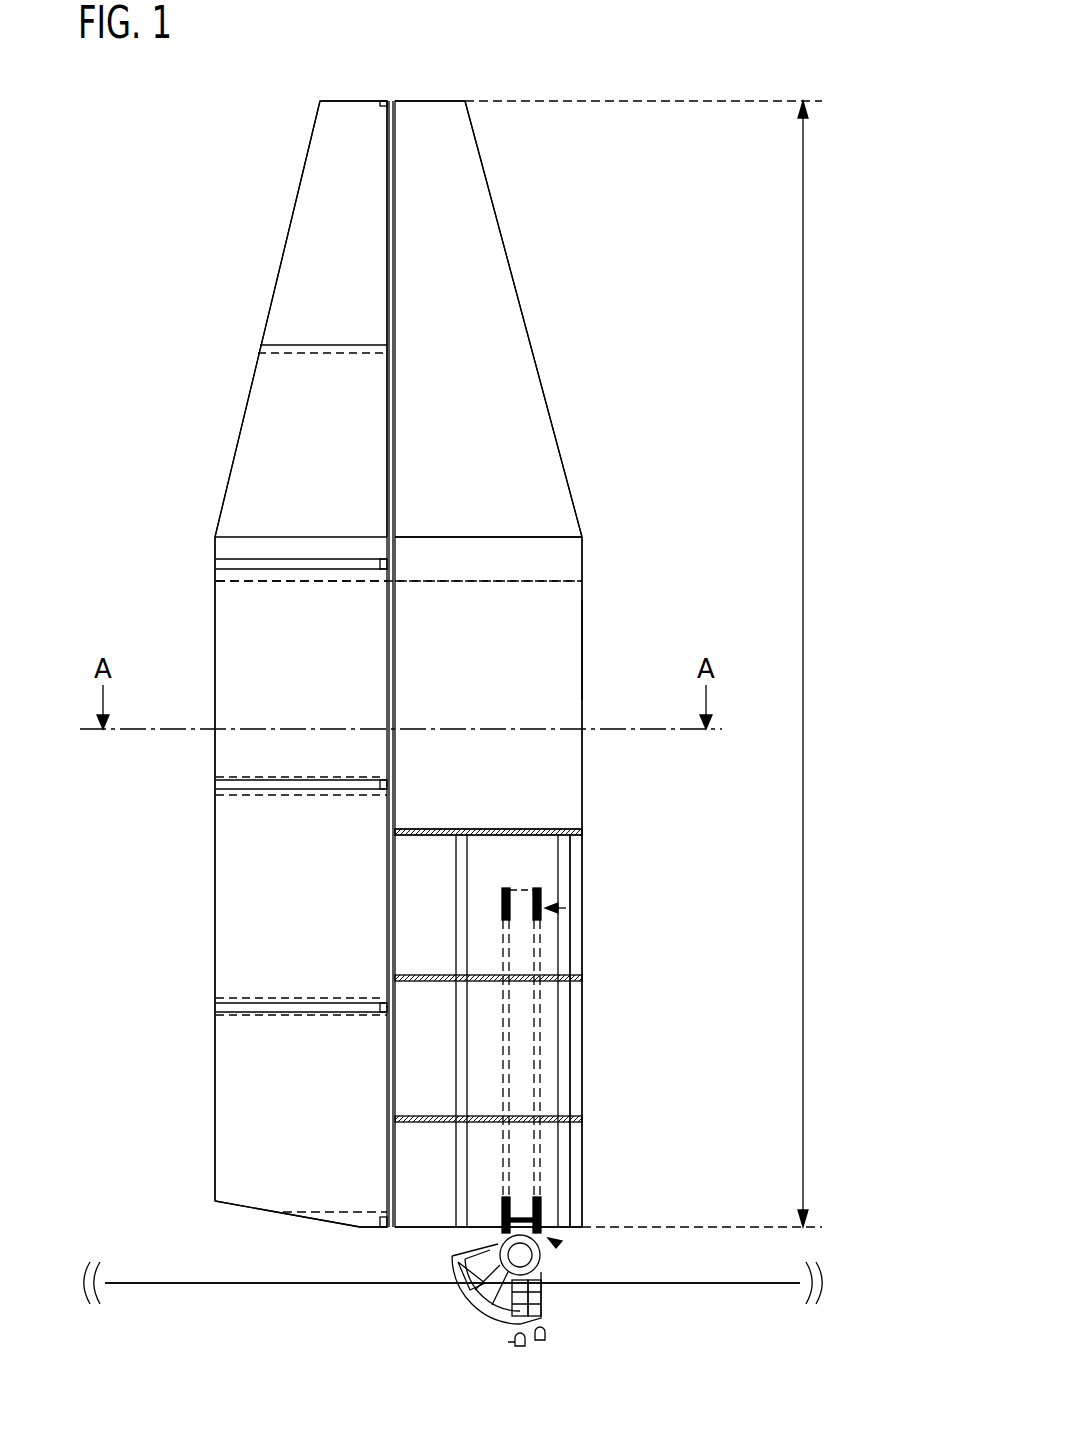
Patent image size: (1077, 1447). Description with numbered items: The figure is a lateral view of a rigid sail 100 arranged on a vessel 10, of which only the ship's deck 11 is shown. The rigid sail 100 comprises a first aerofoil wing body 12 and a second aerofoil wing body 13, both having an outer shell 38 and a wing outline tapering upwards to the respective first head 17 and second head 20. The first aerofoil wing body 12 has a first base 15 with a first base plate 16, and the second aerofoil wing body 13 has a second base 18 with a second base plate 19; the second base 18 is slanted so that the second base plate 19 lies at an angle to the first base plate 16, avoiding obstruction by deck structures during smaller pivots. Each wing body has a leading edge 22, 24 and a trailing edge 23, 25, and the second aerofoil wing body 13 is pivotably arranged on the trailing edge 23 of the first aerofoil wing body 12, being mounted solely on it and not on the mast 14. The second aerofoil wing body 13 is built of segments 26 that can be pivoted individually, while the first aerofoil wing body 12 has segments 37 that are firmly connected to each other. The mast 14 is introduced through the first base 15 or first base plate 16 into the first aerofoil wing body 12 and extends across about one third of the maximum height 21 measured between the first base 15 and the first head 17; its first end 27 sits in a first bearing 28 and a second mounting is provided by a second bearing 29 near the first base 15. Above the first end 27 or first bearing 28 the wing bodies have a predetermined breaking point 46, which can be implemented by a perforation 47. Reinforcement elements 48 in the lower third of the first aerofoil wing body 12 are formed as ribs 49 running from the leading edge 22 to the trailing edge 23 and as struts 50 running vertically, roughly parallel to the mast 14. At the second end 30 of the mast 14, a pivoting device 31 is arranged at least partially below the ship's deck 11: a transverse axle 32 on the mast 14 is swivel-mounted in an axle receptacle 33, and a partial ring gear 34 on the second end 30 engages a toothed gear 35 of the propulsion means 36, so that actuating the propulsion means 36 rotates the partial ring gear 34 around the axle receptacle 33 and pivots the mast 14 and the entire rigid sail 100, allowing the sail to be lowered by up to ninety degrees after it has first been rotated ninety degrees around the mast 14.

The rigid sail 100 is at (741, 64).
The vessel 10 is at (146, 1281).
The ship's deck 11 is at (186, 1281).
The first aerofoil wing body 12 is at (584, 598).
The second aerofoil wing body 13 is at (214, 605).
The mast 14 is at (540, 1085).
The first base 15 is at (558, 1244).
The first base plate 16 is at (430, 1224).
The first head 17 is at (425, 100).
The second base 18 is at (252, 1209).
The second base plate 19 is at (328, 1211).
The second head 20 is at (357, 100).
The maximum height 21 is at (802, 600).
The leading edge 22 is at (584, 693).
The trailing edge 23 is at (397, 383).
The leading edge 24 is at (386, 462).
The trailing edge 25 is at (214, 651).
The segments 26 is at (289, 230).
The first end 27 is at (566, 908).
The first bearing 28 is at (542, 897).
The second bearing 29 is at (542, 1208).
The second end 30 is at (542, 1262).
The pivoting device 31 is at (482, 1305).
The transverse axle 32 is at (541, 1282).
The axle receptacle 33 is at (498, 1248).
The partial ring gear 34 is at (470, 1290).
The toothed gear 35 is at (546, 1336).
The propulsion means 36 is at (514, 1346).
The segments 37 is at (546, 380).
The outer shell 38 is at (240, 462).
The predetermined breaking point 46 is at (260, 584).
The perforation 47 is at (338, 584).
The reinforcement elements 48 is at (514, 828).
The ribs 49 is at (430, 828).
The struts 50 is at (458, 1035).